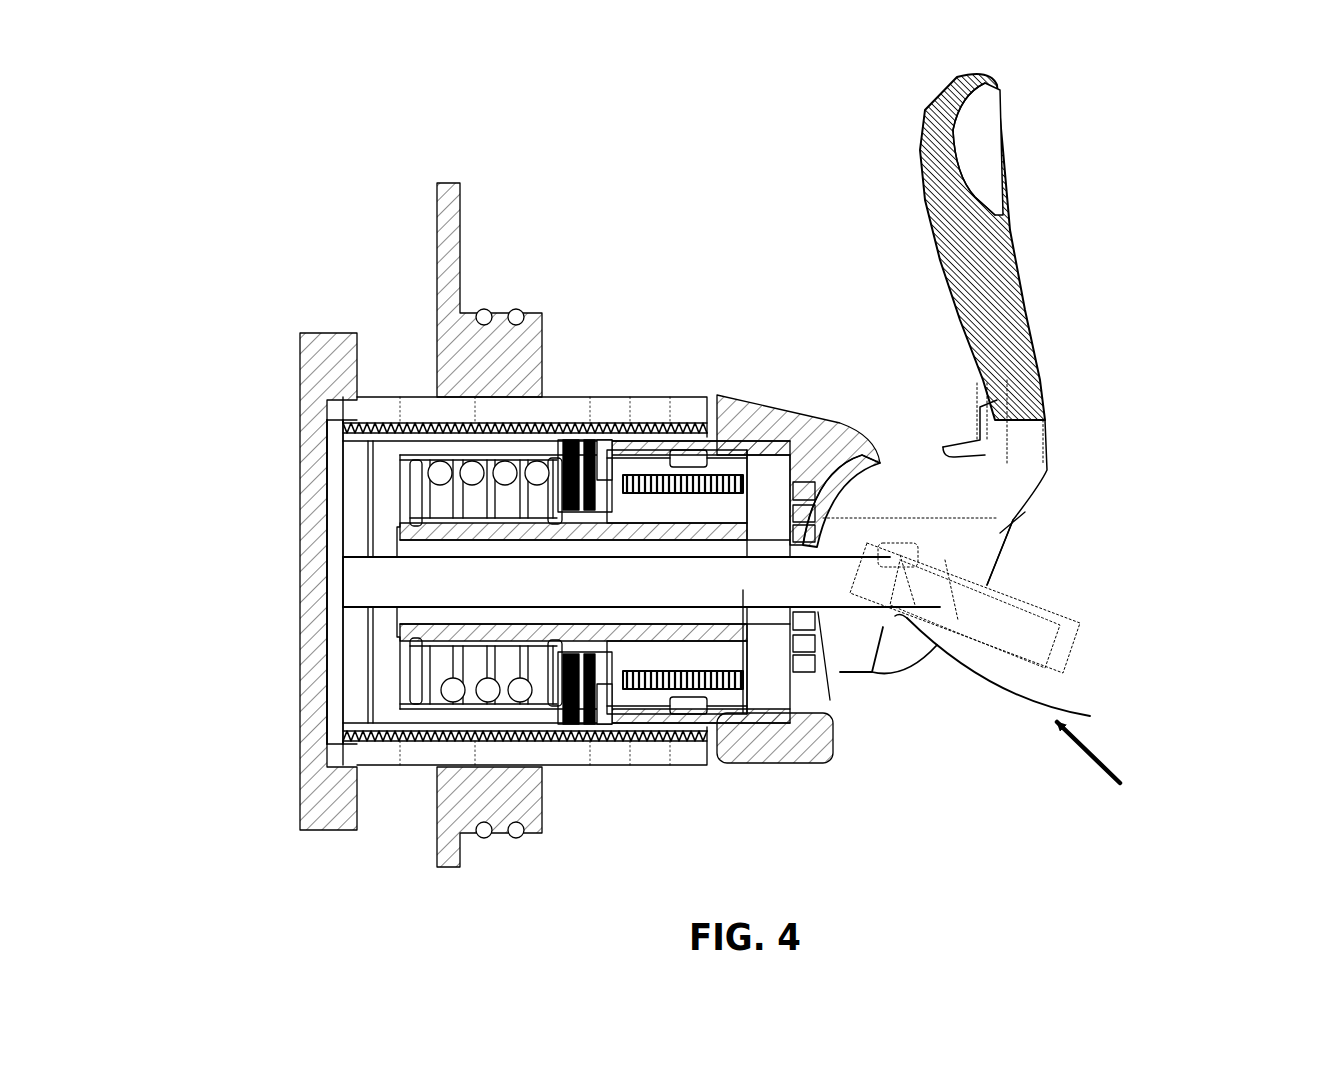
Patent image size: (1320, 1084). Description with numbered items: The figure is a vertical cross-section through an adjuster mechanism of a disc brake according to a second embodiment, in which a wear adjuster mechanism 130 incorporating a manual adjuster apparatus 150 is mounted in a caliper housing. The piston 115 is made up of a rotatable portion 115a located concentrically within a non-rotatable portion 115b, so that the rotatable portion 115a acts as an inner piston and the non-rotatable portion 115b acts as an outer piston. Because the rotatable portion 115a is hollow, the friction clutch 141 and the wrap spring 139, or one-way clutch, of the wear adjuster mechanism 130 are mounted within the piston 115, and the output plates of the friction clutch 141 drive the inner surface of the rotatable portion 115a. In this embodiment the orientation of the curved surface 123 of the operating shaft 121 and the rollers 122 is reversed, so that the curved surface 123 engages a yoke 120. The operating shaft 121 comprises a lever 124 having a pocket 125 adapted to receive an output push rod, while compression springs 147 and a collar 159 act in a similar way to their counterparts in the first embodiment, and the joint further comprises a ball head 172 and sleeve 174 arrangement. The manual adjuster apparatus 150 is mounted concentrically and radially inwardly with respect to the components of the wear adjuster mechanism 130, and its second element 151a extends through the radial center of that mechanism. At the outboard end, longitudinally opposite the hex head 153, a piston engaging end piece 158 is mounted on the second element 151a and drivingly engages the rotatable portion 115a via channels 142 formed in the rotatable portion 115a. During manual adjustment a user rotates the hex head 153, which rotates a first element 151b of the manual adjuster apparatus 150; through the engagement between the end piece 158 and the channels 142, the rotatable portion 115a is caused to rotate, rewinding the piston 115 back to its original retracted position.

The piston 115 is at (385, 805).
The rotatable portion 115a is at (607, 740).
The non-rotatable portion 115b is at (673, 757).
The yoke 120 is at (722, 413).
The operating shaft 121 is at (1023, 473).
The rollers 122 is at (903, 670).
The curved surface 123 is at (880, 457).
The lever 124 is at (983, 298).
The pocket 125 is at (983, 137).
The wear adjuster mechanism 130 is at (670, 367).
The wrap spring 139 is at (730, 690).
The friction clutch 141 is at (577, 720).
The channels 142 is at (397, 452).
The compression springs 147 is at (507, 472).
The manual adjuster apparatus 150 is at (1116, 765).
The second element 151a is at (485, 597).
The first element 151b is at (1013, 607).
The hex head 153 is at (1060, 643).
The piston engaging end piece 158 is at (357, 478).
The collar 159 is at (890, 560).
The ball head 172 is at (880, 583).
The sleeve 174 is at (1015, 673).